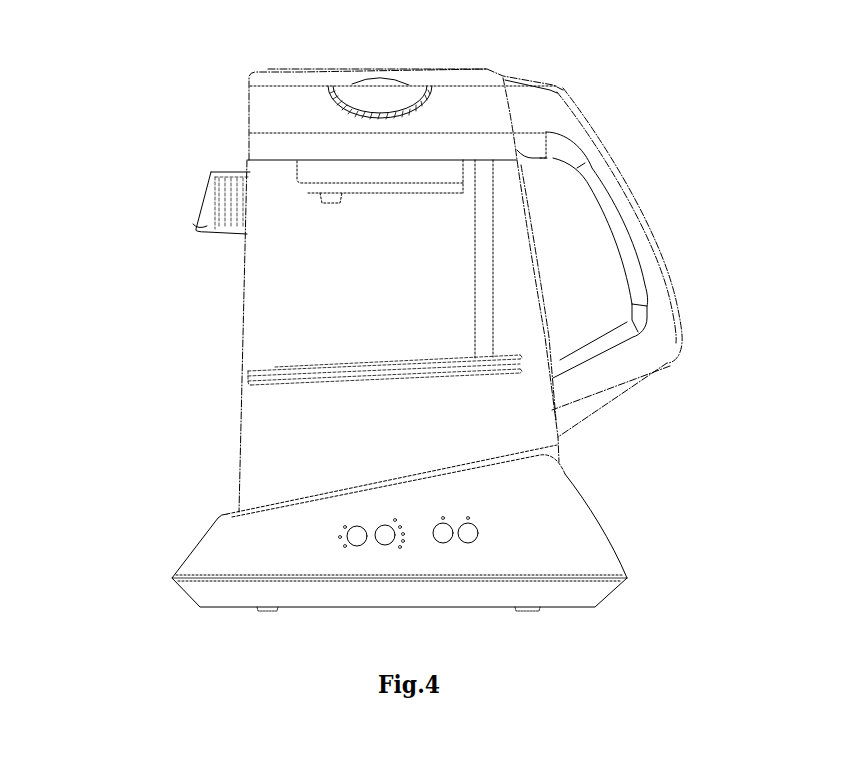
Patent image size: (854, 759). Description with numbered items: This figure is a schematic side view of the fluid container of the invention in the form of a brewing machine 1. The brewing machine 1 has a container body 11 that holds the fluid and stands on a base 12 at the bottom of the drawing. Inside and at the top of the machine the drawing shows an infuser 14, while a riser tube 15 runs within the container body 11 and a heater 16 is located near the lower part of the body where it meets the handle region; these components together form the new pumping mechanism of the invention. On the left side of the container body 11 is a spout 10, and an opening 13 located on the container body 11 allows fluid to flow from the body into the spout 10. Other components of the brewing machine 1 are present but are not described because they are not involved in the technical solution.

The brewing machine 1 is at (401, 340).
The spout 10 is at (199, 198).
The container body 11 is at (322, 323).
The base 12 is at (585, 553).
The opening 13 is at (246, 236).
The infuser 14 is at (463, 175).
The riser tube 15 is at (493, 253).
The heater 16 is at (445, 362).